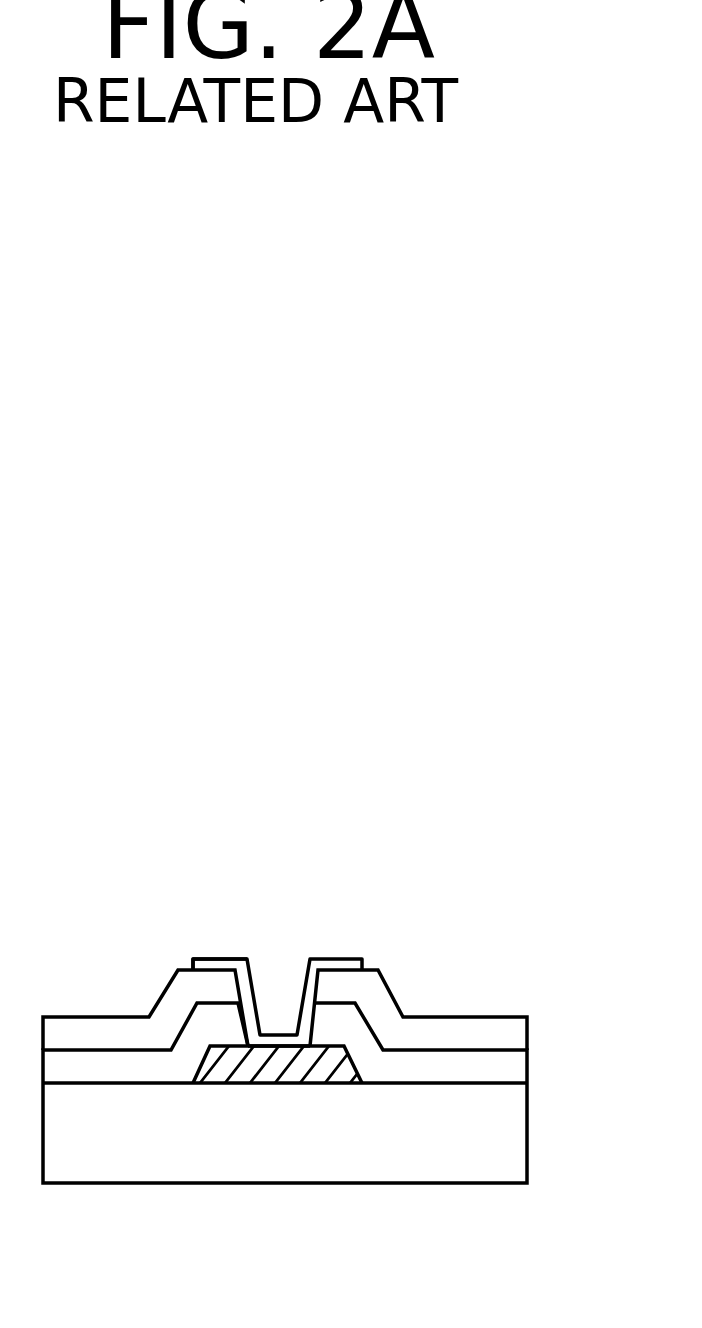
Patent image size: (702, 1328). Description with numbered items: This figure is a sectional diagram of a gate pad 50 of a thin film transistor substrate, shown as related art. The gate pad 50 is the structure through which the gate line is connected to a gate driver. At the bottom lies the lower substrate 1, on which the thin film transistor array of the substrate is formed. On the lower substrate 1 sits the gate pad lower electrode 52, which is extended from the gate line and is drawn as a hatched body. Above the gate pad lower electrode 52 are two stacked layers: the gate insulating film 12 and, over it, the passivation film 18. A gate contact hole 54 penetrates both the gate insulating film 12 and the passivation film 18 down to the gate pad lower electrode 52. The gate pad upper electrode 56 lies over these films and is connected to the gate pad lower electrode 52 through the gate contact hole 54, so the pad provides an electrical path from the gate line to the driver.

The lower substrate 1 is at (513, 1145).
The gate insulating film 12 is at (513, 1071).
The passivation film 18 is at (513, 1033).
The gate pad 50 is at (368, 930).
The gate pad lower electrode 52 is at (275, 1063).
The gate contact hole 54 is at (278, 987).
The gate pad upper electrode 56 is at (220, 962).